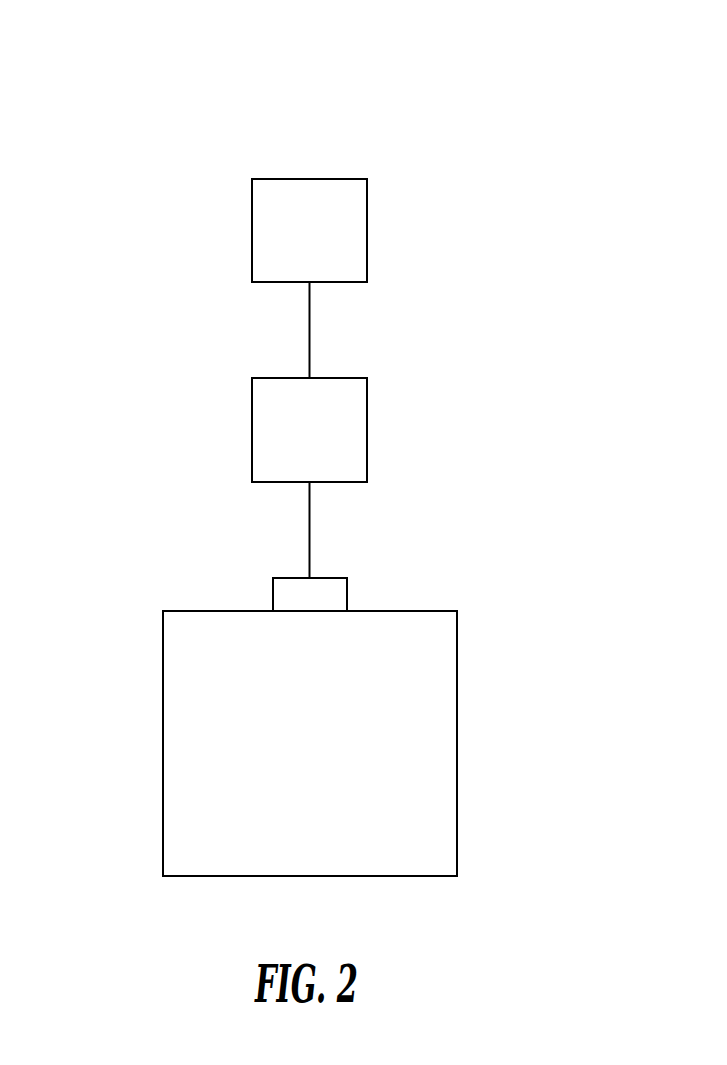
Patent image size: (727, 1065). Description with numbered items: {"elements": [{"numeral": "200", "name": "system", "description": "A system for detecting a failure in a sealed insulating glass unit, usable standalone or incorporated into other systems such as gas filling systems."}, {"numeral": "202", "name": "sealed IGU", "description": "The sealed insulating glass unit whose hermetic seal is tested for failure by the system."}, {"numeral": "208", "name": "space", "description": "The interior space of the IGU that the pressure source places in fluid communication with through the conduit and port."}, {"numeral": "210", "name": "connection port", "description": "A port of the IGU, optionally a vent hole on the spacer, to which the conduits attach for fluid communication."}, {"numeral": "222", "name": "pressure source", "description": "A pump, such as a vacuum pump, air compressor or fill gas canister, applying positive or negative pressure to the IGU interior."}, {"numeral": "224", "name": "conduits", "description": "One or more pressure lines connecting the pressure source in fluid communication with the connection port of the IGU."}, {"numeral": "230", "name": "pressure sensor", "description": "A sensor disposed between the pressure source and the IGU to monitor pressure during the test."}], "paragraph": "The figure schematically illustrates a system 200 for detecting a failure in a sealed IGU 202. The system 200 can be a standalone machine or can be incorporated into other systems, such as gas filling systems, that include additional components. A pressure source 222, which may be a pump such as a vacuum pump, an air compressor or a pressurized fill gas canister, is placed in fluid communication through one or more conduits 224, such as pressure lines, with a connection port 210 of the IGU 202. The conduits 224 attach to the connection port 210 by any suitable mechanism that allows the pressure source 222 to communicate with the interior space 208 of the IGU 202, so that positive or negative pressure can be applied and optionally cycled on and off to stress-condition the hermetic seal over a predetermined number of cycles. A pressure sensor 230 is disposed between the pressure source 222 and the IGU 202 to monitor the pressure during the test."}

The system 200 is at (102, 142).
The housing / body 202 is at (457, 743).
The interior chamber 208 is at (400, 740).
The port / connector 210 is at (347, 593).
The controller unit 222 is at (367, 230).
The connecting line 224 is at (310, 347).
The intermediate unit 230 is at (367, 430).